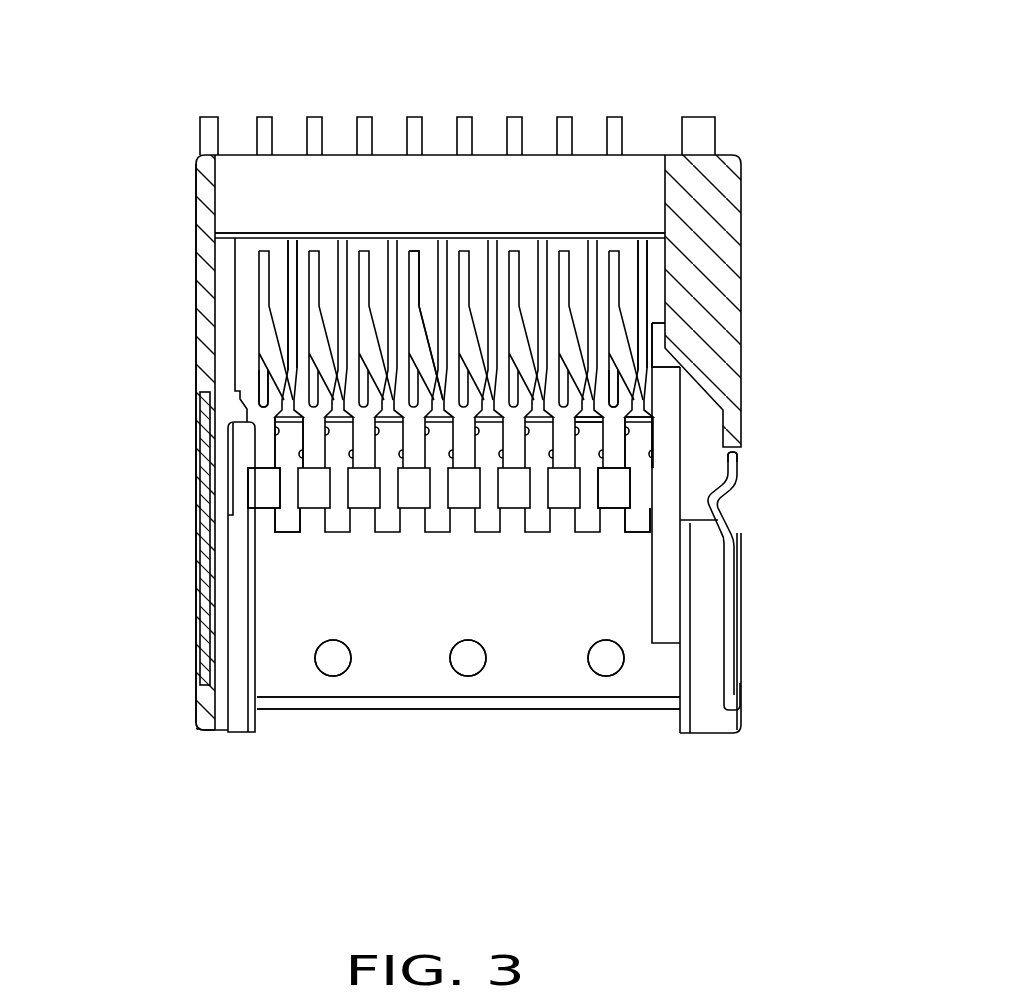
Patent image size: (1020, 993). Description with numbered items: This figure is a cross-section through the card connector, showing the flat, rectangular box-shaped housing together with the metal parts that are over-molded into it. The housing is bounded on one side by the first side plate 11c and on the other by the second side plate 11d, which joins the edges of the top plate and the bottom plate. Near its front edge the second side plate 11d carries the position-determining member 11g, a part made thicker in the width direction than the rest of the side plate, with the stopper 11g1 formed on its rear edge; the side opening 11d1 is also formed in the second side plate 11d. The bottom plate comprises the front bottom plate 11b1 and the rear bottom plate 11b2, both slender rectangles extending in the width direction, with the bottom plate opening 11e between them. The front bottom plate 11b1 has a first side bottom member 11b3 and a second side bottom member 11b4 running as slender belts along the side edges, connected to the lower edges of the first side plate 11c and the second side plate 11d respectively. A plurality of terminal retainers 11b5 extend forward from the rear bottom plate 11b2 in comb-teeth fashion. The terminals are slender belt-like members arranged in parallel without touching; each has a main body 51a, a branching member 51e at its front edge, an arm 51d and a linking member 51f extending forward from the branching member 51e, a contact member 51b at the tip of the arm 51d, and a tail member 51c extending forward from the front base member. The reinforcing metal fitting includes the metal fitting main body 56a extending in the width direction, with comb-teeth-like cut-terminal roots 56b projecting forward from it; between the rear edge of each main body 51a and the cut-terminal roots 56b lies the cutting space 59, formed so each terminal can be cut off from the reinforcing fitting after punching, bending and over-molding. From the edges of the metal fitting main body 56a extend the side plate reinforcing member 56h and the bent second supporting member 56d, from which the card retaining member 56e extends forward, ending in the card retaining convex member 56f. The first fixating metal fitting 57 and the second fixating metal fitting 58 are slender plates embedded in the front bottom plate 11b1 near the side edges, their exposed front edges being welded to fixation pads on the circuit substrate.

The first fixating metal fitting 57 is at (211, 116).
The second fixating metal fitting 58 is at (700, 122).
The front bottom plate 11b1 is at (483, 165).
The position-determining member 11g is at (697, 297).
The bottom plate opening 11e is at (650, 253).
The stopper 11g1 is at (707, 390).
The terminal retainers 11b5 is at (590, 437).
The first side plate 11c is at (197, 713).
The side plate reinforcing member 56h is at (210, 516).
The first side bottom member 11b3 is at (232, 725).
The rear bottom plate 11b2 is at (401, 703).
The metal fitting main body 56a is at (534, 658).
The second side bottom member 11b4 is at (713, 737).
The second side plate 11d is at (729, 712).
The card retaining convex member 56f is at (710, 502).
The card retaining member 56e is at (738, 607).
The second supporting member 56d is at (733, 677).
The side opening 11d1 is at (737, 456).
The contact member 51b is at (412, 253).
The linking member 51f is at (388, 268).
The tail member 51c is at (421, 335).
The arm 51d is at (426, 322).
The branching member 51e is at (308, 403).
The main body 51a is at (313, 443).
The cutting space 59 is at (310, 487).
The cut-terminal roots 56b is at (317, 522).